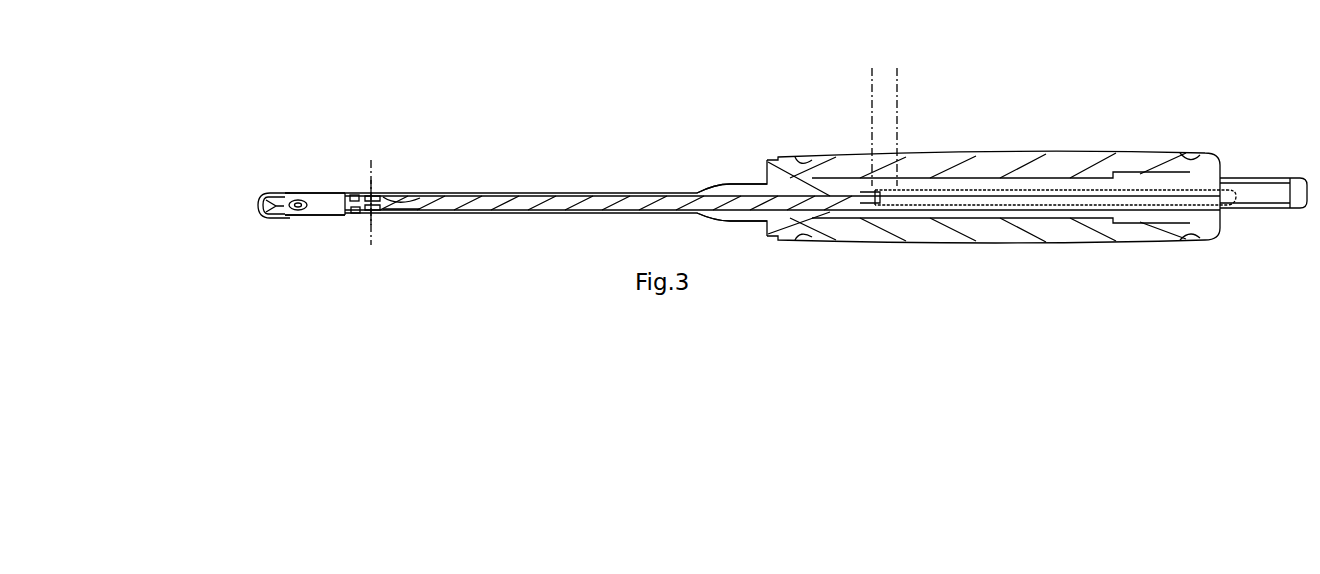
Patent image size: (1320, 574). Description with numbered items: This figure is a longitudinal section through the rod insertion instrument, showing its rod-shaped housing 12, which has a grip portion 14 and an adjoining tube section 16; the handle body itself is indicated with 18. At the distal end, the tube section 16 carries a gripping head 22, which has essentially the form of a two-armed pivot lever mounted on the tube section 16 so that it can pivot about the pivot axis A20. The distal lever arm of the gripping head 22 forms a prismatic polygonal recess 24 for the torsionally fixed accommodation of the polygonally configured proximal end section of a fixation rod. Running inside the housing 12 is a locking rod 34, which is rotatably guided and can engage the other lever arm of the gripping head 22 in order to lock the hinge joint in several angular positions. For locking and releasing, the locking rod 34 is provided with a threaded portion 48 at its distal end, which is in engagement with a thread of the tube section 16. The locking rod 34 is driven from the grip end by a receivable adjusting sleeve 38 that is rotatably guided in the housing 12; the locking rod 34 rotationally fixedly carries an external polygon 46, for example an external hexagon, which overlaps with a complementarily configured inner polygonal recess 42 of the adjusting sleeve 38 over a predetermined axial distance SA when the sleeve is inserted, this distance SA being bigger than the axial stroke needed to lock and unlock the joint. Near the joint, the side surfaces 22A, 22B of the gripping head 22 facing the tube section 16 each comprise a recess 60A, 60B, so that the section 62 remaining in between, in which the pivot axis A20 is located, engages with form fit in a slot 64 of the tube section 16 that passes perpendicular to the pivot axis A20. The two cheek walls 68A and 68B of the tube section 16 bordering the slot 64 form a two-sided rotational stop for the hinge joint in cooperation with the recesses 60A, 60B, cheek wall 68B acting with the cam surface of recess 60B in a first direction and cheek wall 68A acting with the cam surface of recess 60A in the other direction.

The rod-shaped housing 12 is at (731, 176).
The grip portion 14 is at (972, 182).
The tube section 16 is at (482, 196).
The handle body 18 is at (1032, 167).
The gripping head 22 is at (331, 220).
The side surface 22A is at (337, 193).
The side surface 22B is at (314, 220).
The prismatic polygonal recess 24 is at (280, 220).
The locking rod 34 is at (553, 196).
The adjusting sleeve 38 is at (1087, 186).
The inner polygonal recess 42 is at (897, 212).
The external polygon 46 is at (880, 212).
The threaded portion 48 is at (398, 220).
The recess 60A is at (358, 195).
The recess 60B is at (357, 220).
The section 62 is at (340, 193).
The slot 64 is at (393, 197).
The cheek wall 68A is at (400, 196).
The cheek wall 68B is at (376, 220).
The pivot axis A20 is at (368, 168).
The axial distance SA is at (853, 77).